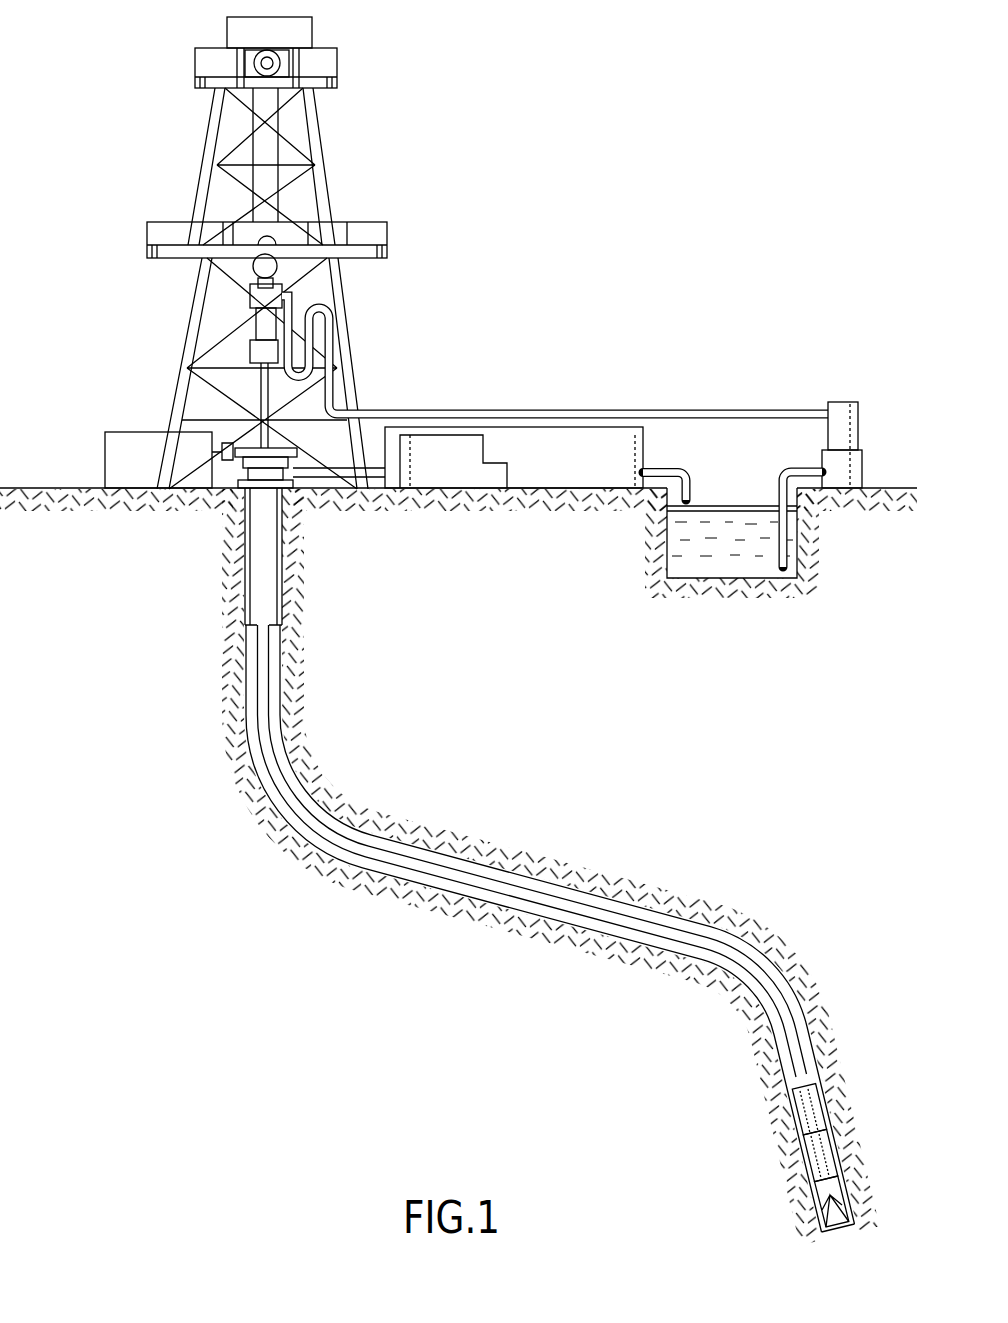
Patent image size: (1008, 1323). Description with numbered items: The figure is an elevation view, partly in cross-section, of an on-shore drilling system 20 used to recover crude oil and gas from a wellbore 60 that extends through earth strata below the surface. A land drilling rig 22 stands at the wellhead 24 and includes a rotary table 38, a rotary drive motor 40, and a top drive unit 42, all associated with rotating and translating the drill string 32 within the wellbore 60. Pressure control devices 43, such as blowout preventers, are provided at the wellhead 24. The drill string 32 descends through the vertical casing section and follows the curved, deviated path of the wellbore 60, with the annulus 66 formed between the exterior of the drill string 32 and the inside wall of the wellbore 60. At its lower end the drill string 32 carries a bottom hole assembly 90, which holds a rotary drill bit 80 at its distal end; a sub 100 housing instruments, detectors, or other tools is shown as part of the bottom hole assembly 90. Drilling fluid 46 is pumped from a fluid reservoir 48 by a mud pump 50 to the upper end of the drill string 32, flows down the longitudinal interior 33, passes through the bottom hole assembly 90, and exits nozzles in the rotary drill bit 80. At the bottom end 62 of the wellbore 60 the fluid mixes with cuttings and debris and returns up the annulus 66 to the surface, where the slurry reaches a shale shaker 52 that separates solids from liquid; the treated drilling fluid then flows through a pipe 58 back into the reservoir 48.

The drilling system 20 is at (414, 109).
The drilling rig 22 is at (206, 150).
The top drive unit 42 is at (250, 290).
The rotary drive motor 40 is at (113, 432).
The rotary table 38 is at (300, 450).
The wellhead 24 is at (231, 475).
The pressure control devices 43 is at (290, 515).
The mud pump 50 is at (571, 478).
The shale shaker 52 is at (447, 478).
The pipe 58 is at (692, 478).
The drilling fluid 46 is at (688, 553).
The fluid reservoir 48 is at (748, 578).
The annulus 66 is at (247, 676).
The wellbore 60 is at (375, 830).
The bottom end 62 is at (832, 1231).
The drill string 32 is at (268, 803).
The longitudinal interior 33 is at (470, 870).
The sub 100 is at (792, 1099).
The bottom hole assembly 90 is at (805, 1152).
The rotary drill bit 80 is at (822, 1201).